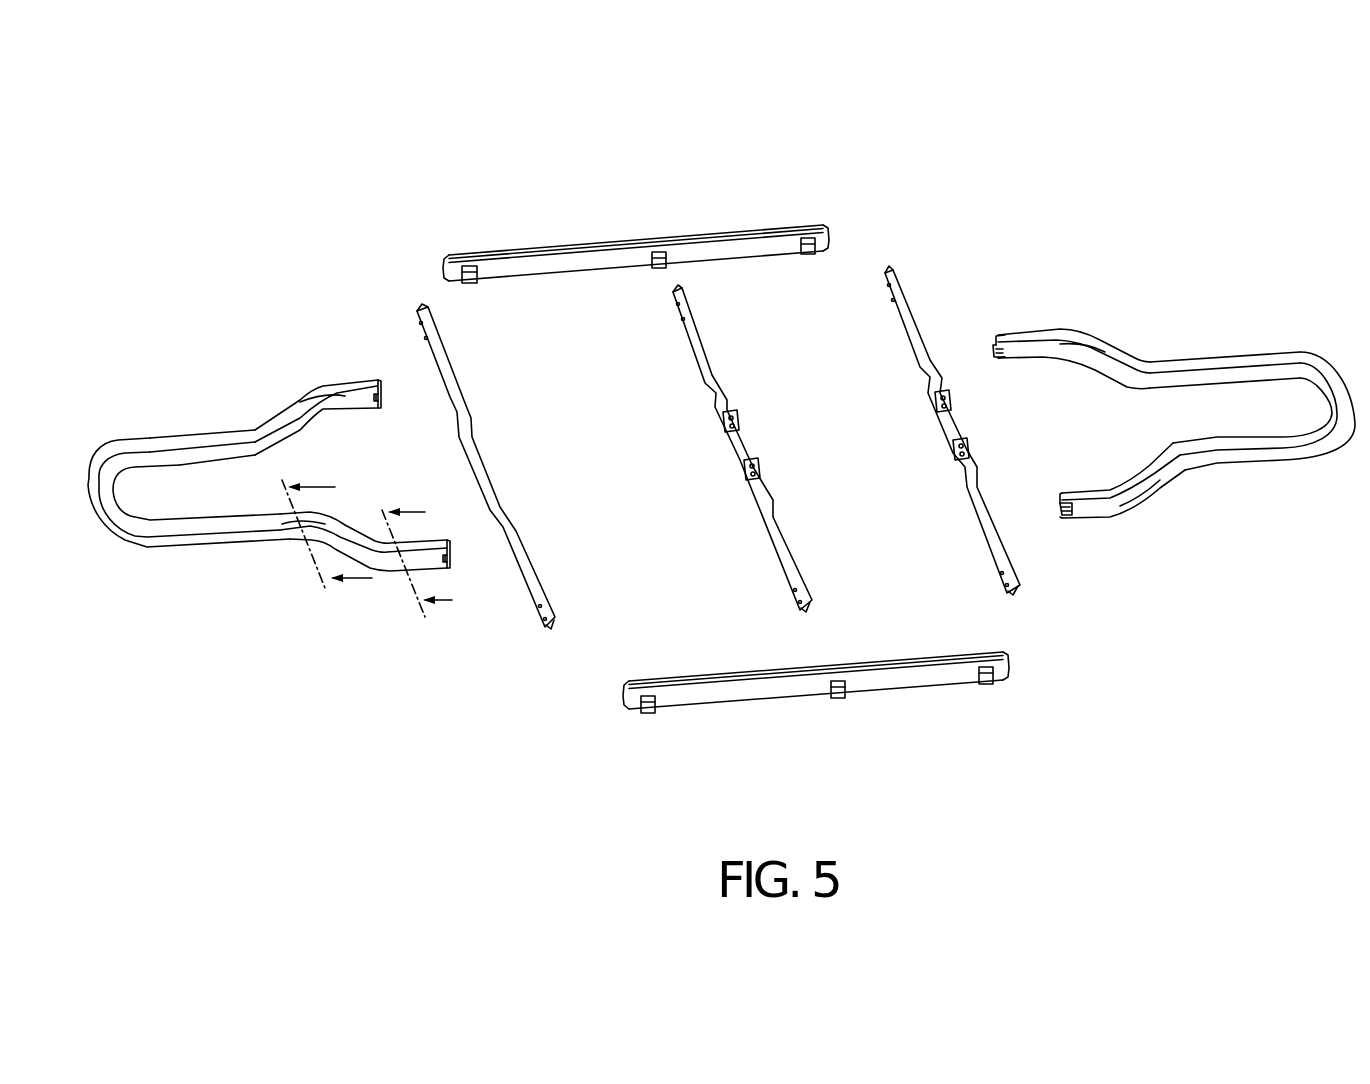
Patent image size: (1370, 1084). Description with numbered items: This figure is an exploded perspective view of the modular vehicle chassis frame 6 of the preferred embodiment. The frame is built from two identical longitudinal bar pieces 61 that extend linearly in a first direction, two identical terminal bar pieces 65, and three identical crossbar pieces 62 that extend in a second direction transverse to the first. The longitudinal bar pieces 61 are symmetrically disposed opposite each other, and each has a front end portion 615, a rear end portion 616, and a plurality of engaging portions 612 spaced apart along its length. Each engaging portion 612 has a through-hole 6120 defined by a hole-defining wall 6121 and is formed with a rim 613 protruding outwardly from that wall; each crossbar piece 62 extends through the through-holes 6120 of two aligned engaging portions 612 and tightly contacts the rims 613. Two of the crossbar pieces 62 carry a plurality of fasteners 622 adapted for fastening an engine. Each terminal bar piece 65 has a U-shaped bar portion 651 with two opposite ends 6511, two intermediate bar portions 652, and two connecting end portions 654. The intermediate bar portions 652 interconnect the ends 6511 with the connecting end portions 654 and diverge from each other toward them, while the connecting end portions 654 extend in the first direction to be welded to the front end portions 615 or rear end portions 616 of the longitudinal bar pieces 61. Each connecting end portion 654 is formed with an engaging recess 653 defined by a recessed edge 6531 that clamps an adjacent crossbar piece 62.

The modular vehicle chassis frame 6 is at (468, 752).
The longitudinal bar piece 61 is at (721, 478).
The engaging portion 612 is at (490, 252).
The through-hole 6120 is at (769, 529).
The hole-defining wall 6121 is at (1012, 728).
The rim 613 is at (750, 482).
The front end portion 615 is at (447, 257).
The rear end portion 616 is at (825, 232).
The crossbar piece 62 is at (718, 431).
The fastener 622 is at (745, 468).
The terminal bar piece 65 is at (715, 453).
The U-shaped bar portion 651 is at (135, 447).
The opposite end 6511 is at (255, 425).
The intermediate bar portion 652 is at (290, 415).
The engaging recess 653 is at (725, 454).
The recessed edge 6531 is at (395, 392).
The connecting end portion 654 is at (357, 380).